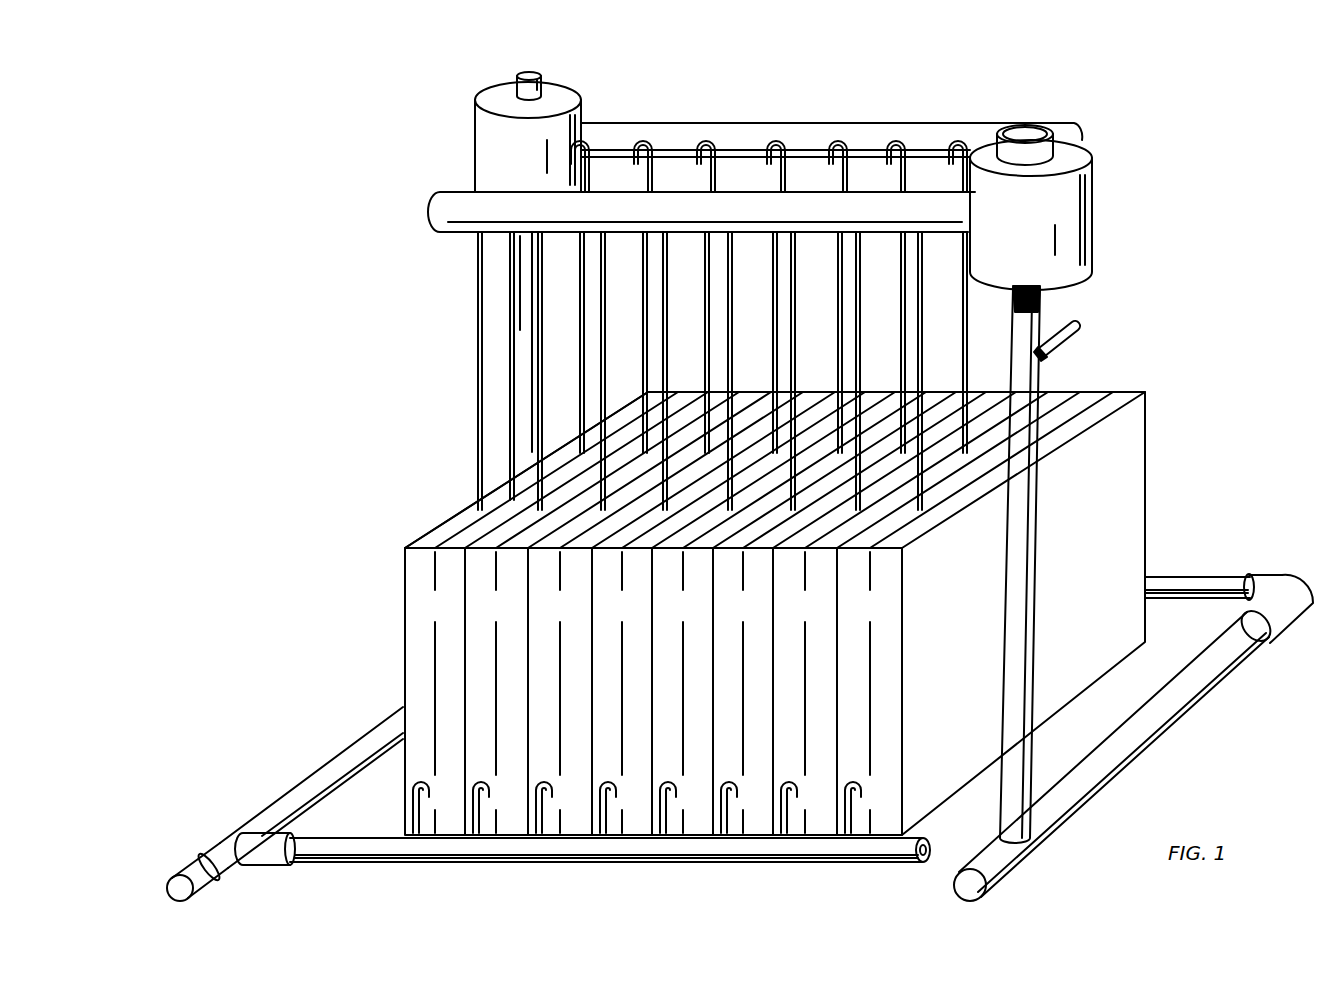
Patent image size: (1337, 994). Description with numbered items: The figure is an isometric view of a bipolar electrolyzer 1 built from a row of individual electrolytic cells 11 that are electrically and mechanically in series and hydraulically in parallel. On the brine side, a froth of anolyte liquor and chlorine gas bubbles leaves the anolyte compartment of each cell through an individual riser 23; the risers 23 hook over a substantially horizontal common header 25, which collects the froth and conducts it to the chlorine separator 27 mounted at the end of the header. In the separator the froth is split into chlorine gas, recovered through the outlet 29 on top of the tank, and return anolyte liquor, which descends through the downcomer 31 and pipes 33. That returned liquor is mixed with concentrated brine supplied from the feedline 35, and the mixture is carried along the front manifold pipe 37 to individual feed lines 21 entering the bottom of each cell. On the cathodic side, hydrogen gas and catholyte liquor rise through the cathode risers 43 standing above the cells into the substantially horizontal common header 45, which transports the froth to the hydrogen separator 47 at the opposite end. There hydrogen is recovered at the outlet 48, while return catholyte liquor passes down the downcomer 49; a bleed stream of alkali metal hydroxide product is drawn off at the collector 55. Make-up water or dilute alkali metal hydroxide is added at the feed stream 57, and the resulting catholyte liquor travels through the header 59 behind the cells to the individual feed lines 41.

The bipolar electrolyzer 1 is at (400, 612).
The electrolytic cells 11 is at (879, 617).
The feed lines 21 is at (869, 800).
The risers 23 is at (604, 148).
The common header 25 is at (645, 128).
The chlorine separator 27 is at (482, 130).
The outlet 29 is at (520, 84).
The downcomer 31 is at (522, 320).
The pipes 33 is at (358, 740).
The feedline 35 is at (195, 862).
The manifold pipe 37 is at (400, 862).
The feed lines 41 is at (1148, 551).
The cathode risers 43 is at (663, 234).
The common header 45 is at (438, 210).
The hydrogen separator 47 is at (1094, 180).
The outlet 48 is at (1028, 130).
The downcomer 49 is at (1043, 292).
The collector 55 is at (1080, 334).
The feed stream 57 is at (1010, 880).
The header 59 is at (1212, 577).